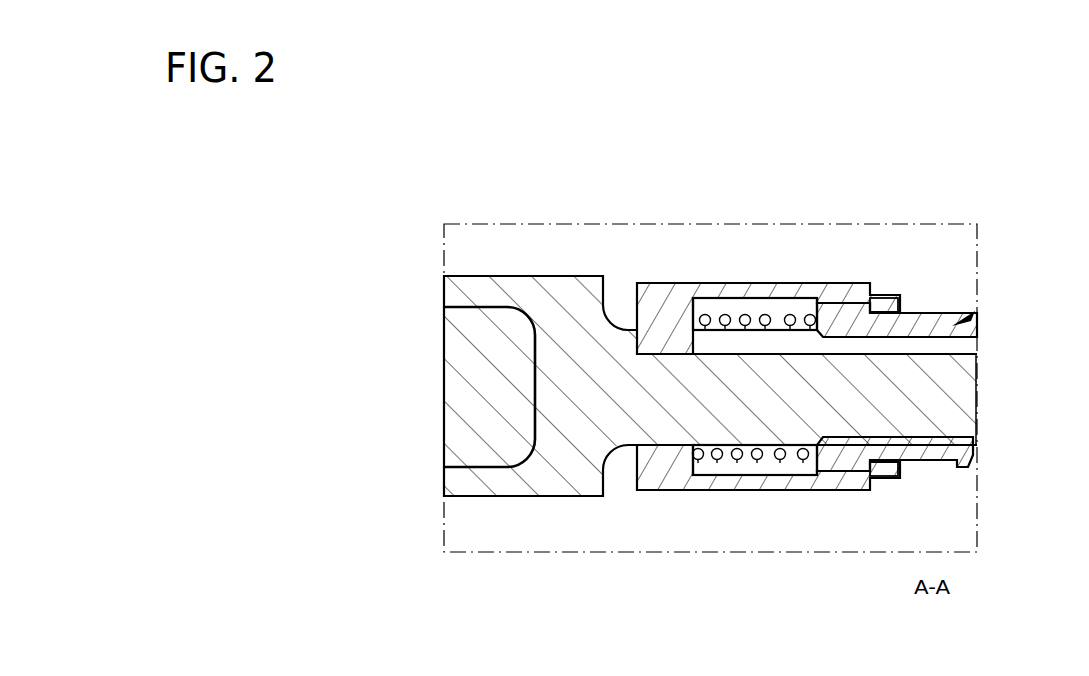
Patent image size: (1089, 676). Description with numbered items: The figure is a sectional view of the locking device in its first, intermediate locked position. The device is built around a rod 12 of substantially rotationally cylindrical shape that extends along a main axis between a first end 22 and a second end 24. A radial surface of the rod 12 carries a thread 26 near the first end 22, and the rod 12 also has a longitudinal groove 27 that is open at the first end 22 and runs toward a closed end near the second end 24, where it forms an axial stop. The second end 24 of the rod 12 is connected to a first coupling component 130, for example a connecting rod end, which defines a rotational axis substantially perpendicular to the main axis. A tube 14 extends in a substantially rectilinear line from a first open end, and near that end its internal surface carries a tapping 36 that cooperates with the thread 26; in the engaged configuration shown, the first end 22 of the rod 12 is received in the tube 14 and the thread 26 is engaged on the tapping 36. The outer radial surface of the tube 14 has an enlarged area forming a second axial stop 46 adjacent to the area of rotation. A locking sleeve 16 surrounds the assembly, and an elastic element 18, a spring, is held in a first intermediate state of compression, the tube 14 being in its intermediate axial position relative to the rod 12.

The first coupling component 130 is at (492, 242).
The locking sleeve 16 is at (681, 260).
The elastic element 18 is at (746, 316).
The longitudinal groove 27 is at (800, 332).
The rod 12 is at (888, 364).
The second axial stop 46 is at (958, 307).
The tube 14 is at (976, 314).
The first end 22 is at (944, 386).
The tapping 36 is at (976, 418).
The second end 24 is at (620, 490).
The thread 26 is at (746, 480).